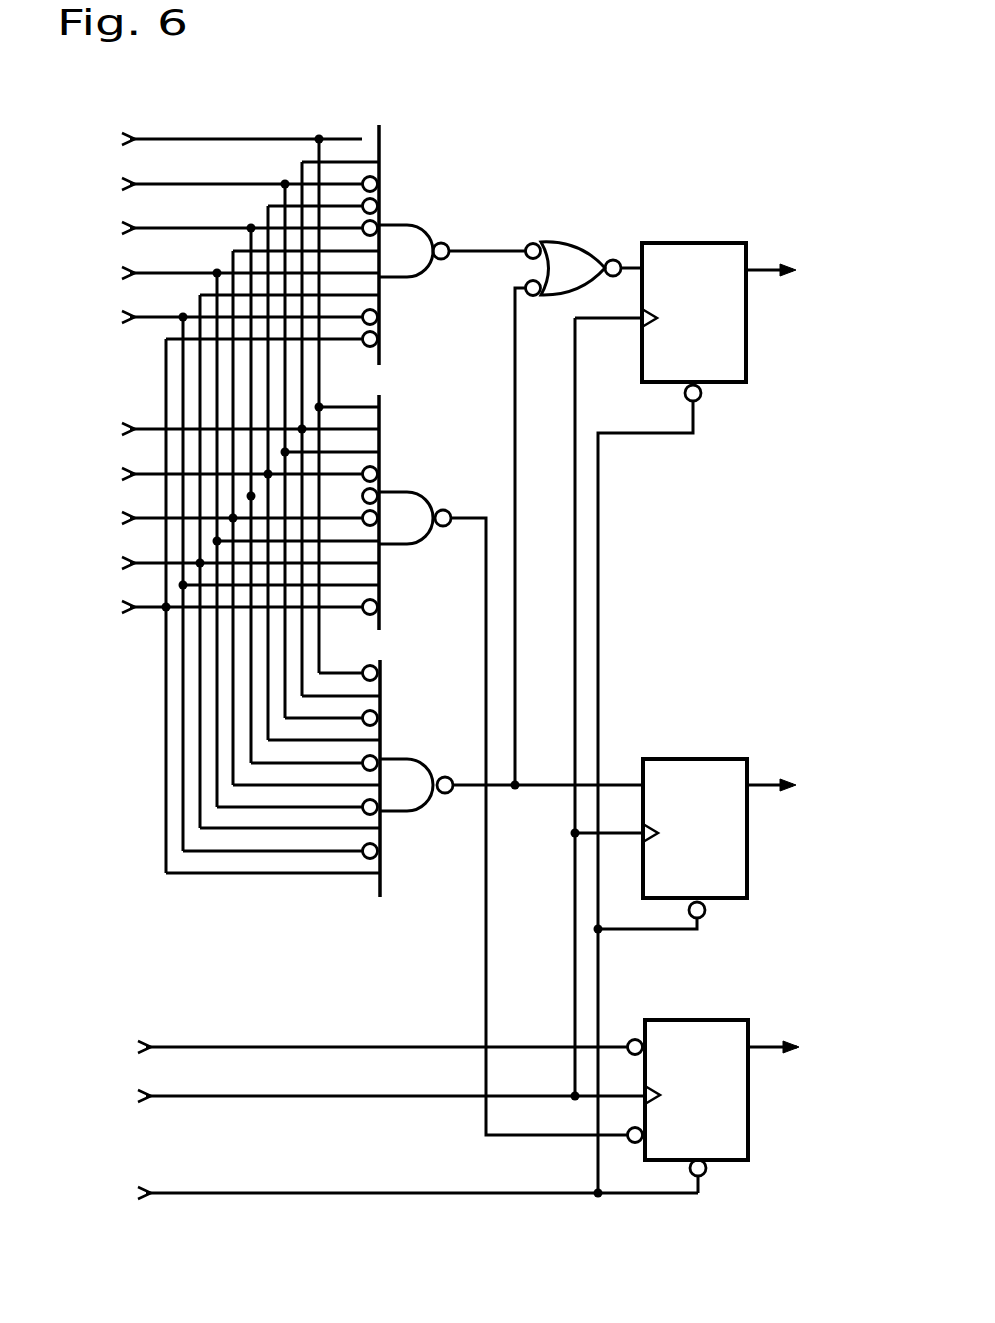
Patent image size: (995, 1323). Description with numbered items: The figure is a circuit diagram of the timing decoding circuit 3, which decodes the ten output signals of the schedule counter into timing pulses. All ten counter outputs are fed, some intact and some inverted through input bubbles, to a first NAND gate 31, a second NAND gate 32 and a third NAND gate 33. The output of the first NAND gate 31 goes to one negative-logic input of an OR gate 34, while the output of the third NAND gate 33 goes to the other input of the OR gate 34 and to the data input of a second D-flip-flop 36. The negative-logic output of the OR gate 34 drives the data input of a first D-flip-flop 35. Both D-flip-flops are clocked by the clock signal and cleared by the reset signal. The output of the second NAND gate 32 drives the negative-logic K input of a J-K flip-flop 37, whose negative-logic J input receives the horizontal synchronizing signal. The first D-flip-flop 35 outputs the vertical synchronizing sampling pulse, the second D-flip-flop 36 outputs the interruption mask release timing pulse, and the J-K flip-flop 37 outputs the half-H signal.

The timing decoding circuit 3 is at (760, 194).
The first NAND gate 31 is at (392, 222).
The second NAND gate 32 is at (394, 488).
The third NAND gate 33 is at (396, 756).
The OR gate 34 is at (559, 244).
The first D-flip-flop 35 is at (692, 242).
The second D-flip-flop 36 is at (730, 758).
The J-K flip-flop 37 is at (730, 1019).